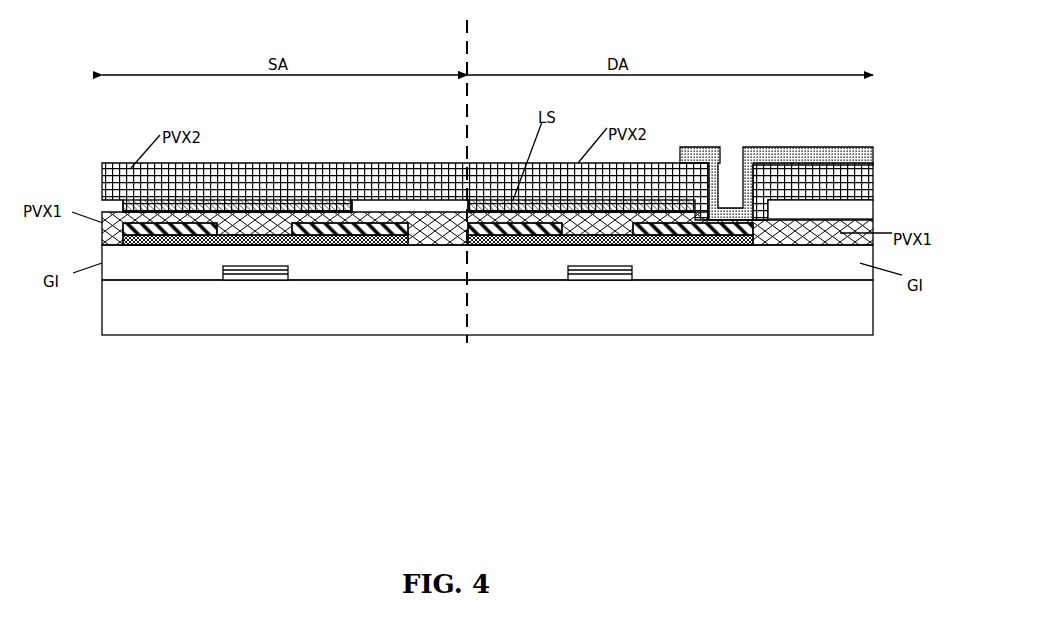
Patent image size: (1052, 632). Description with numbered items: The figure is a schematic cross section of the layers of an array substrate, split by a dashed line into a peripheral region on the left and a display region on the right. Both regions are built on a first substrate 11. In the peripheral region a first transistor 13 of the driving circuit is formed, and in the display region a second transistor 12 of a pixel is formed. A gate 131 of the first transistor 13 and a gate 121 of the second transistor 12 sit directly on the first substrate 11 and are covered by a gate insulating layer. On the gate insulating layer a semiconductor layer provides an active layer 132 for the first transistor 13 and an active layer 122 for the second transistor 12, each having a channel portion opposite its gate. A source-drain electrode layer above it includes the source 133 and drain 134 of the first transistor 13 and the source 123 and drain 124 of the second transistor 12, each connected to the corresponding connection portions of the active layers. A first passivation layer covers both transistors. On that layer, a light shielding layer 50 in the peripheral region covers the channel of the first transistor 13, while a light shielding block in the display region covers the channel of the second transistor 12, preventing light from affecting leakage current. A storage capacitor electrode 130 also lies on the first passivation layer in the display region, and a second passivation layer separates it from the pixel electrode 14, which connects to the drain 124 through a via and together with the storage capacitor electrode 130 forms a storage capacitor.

The first substrate 11 is at (732, 322).
The second transistor 12 is at (607, 349).
The first transistor 13 is at (258, 347).
The pixel electrode 14 is at (850, 153).
The light shielding layer 50 is at (267, 200).
The gate 121 is at (593, 278).
The active layer 122 is at (568, 231).
The source 123 is at (523, 228).
The drain 124 is at (680, 237).
The storage capacitor electrode 130 is at (850, 207).
The gate 131 is at (247, 278).
The active layer 132 is at (218, 233).
The source 133 is at (168, 228).
The drain 134 is at (338, 228).